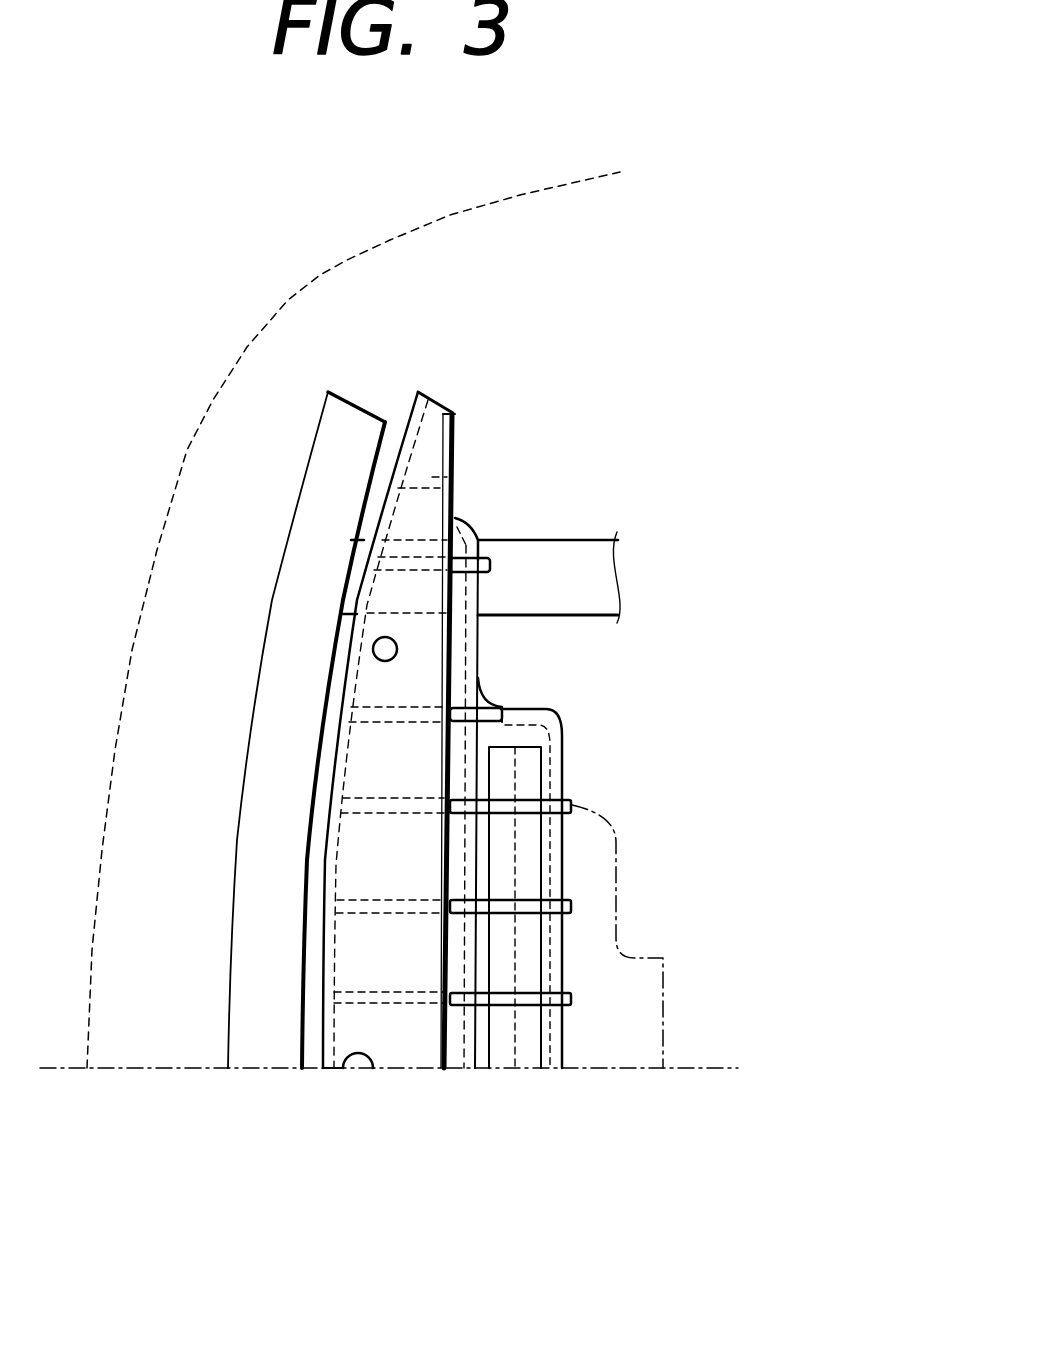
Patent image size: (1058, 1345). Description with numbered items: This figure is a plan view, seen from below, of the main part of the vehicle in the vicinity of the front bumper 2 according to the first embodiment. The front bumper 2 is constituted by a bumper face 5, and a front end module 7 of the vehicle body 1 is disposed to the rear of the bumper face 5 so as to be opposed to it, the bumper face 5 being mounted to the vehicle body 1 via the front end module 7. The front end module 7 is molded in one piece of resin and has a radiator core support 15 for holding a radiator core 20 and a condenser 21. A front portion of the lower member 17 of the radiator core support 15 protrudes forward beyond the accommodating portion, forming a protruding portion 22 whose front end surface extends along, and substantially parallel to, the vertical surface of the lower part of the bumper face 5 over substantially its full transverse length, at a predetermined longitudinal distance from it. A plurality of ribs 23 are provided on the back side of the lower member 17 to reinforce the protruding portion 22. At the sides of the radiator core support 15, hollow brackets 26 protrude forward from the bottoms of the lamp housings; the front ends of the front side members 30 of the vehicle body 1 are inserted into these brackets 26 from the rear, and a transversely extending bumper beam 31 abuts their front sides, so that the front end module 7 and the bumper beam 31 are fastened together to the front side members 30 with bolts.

The vehicle body 1 is at (825, 343).
The front bumper 2 is at (215, 292).
The bumper face 5 is at (345, 262).
The front end module 7 is at (431, 1160).
The radiator core support 15 is at (596, 1102).
The lower member 17 is at (563, 738).
The radiator core 20 is at (530, 1070).
The condenser 21 is at (500, 1070).
The protruding portion 22 is at (327, 1070).
The ribs 23 is at (455, 460).
The hollow brackets 26 is at (353, 573).
The front side members 30 is at (598, 538).
The bumper beam 31 is at (232, 872).